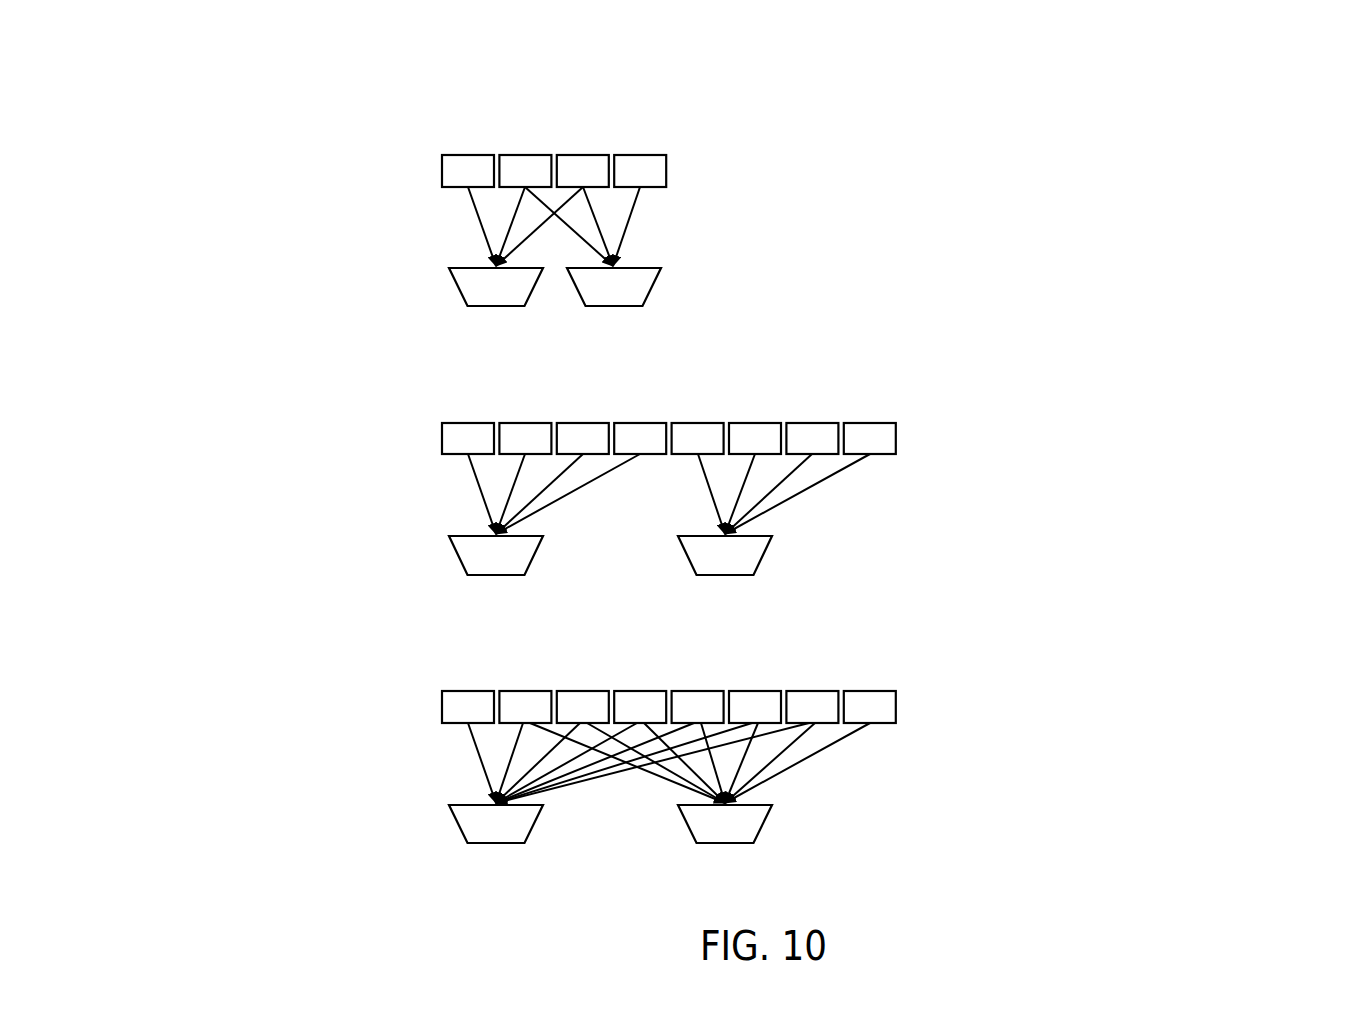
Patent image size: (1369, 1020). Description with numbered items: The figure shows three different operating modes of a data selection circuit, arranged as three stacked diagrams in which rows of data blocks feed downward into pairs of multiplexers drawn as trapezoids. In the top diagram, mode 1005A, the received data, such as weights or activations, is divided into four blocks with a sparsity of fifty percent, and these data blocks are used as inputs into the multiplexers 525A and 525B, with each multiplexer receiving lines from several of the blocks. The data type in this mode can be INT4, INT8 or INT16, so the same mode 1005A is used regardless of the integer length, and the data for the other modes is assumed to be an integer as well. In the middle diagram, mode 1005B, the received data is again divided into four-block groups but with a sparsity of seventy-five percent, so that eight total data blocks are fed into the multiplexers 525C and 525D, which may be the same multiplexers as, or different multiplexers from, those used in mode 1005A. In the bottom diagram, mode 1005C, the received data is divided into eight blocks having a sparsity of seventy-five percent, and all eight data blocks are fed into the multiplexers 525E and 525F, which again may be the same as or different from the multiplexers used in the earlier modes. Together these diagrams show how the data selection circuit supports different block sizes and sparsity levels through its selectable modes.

The mode 1005A is at (366, 126).
The mode 1005B is at (366, 394).
The mode 1005C is at (366, 661).
The multiplexer 525A is at (449, 268).
The multiplexer 525B is at (661, 268).
The multiplexer 525C is at (543, 536).
The multiplexer 525D is at (772, 536).
The multiplexer 525E is at (543, 805).
The multiplexer 525F is at (772, 805).